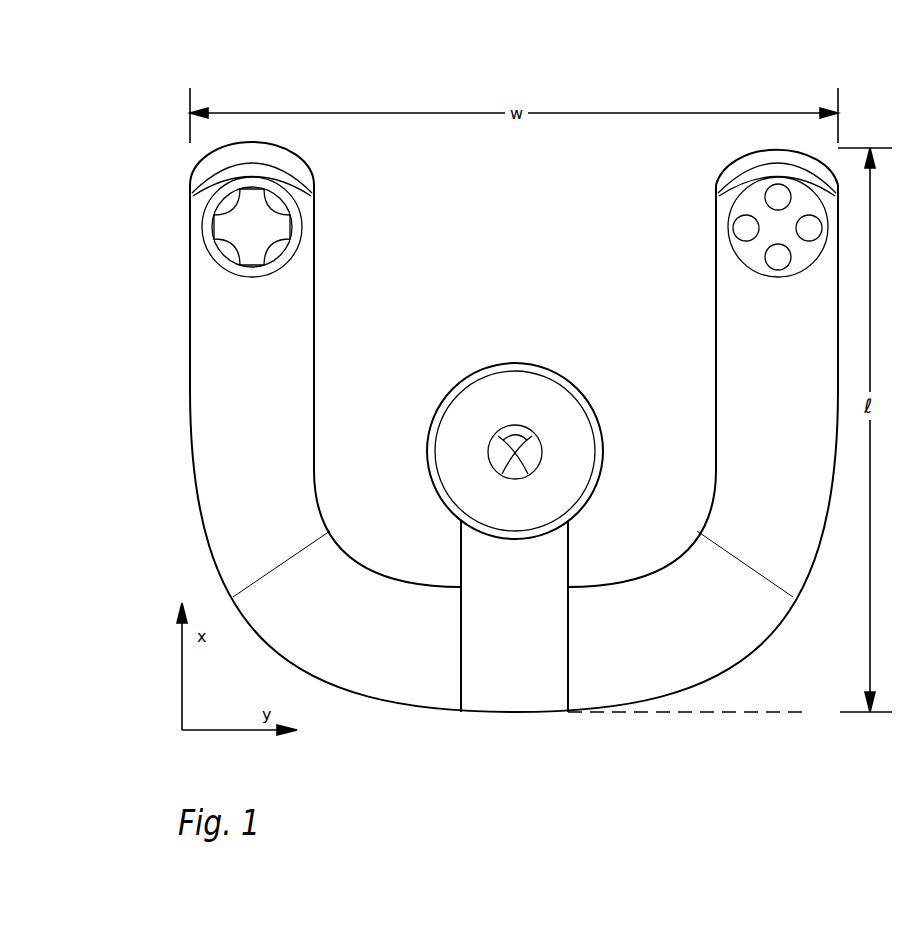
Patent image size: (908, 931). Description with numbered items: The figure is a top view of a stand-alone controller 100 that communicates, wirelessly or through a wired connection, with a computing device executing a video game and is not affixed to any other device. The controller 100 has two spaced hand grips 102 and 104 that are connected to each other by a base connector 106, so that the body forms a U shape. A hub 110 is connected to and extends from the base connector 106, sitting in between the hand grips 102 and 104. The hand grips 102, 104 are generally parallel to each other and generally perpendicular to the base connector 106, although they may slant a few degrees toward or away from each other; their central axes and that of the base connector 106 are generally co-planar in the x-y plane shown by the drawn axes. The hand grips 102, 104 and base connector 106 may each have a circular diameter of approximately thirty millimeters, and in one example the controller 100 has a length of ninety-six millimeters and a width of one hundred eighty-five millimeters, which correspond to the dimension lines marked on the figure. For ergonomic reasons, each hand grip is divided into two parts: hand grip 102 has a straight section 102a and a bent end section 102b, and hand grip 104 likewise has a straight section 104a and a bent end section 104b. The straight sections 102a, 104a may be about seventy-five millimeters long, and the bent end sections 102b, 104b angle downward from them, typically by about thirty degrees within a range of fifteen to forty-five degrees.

The controller 100 is at (766, 719).
The hand grip 102 is at (314, 312).
The straight section 102a is at (314, 417).
The bent end section 102b is at (314, 210).
The hand grip 104 is at (716, 325).
The straight section 104a is at (716, 417).
The bent end section 104b is at (716, 212).
The base connector 106 is at (443, 710).
The hub 110 is at (512, 362).